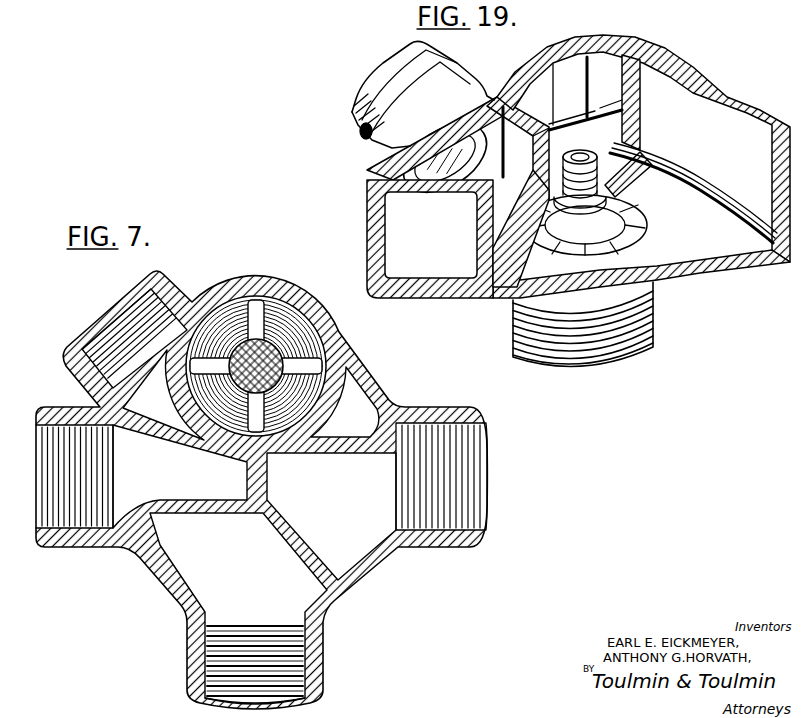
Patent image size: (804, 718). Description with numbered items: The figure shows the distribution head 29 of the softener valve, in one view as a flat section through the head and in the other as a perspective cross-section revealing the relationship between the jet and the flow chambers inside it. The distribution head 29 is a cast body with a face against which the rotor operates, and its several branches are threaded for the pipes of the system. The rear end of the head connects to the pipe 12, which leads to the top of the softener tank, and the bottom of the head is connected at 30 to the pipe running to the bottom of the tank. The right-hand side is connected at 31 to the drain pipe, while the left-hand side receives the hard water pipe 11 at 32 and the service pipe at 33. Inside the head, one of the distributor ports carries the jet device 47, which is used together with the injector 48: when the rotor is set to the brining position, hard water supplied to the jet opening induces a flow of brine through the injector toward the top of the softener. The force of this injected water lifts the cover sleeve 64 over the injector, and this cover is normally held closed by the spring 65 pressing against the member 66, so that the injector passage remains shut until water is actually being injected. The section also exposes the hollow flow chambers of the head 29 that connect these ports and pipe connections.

In FIG. 7, the distribution head 29 is at (294, 283).
In FIG. 19, the distribution head 29 is at (578, 164).
In FIG. 7, the hard water pipe connection 32 is at (108, 310).
In FIG. 19, the hard water pipe connection 32 is at (415, 94).
In FIG. 7, the service pipe connection 33 is at (68, 535).
In FIG. 7, the drain pipe connection 31 is at (474, 474).
In FIG. 7, the bottom pipe connection 30 is at (252, 636).
In FIG. 7, the jet device 47 is at (256, 300).
In FIG. 7, the spring 65 is at (298, 318).
In FIG. 19, the spring 65 is at (624, 231).
In FIG. 7, the member 66 is at (318, 364).
In FIG. 19, the member 66 is at (604, 218).
In FIG. 7, the cover sleeve 64 is at (282, 392).
In FIG. 19, the hard water pipe 11 is at (374, 78).
In FIG. 19, the injector 48 is at (602, 172).
In FIG. 19, the pipe 12 is at (571, 366).